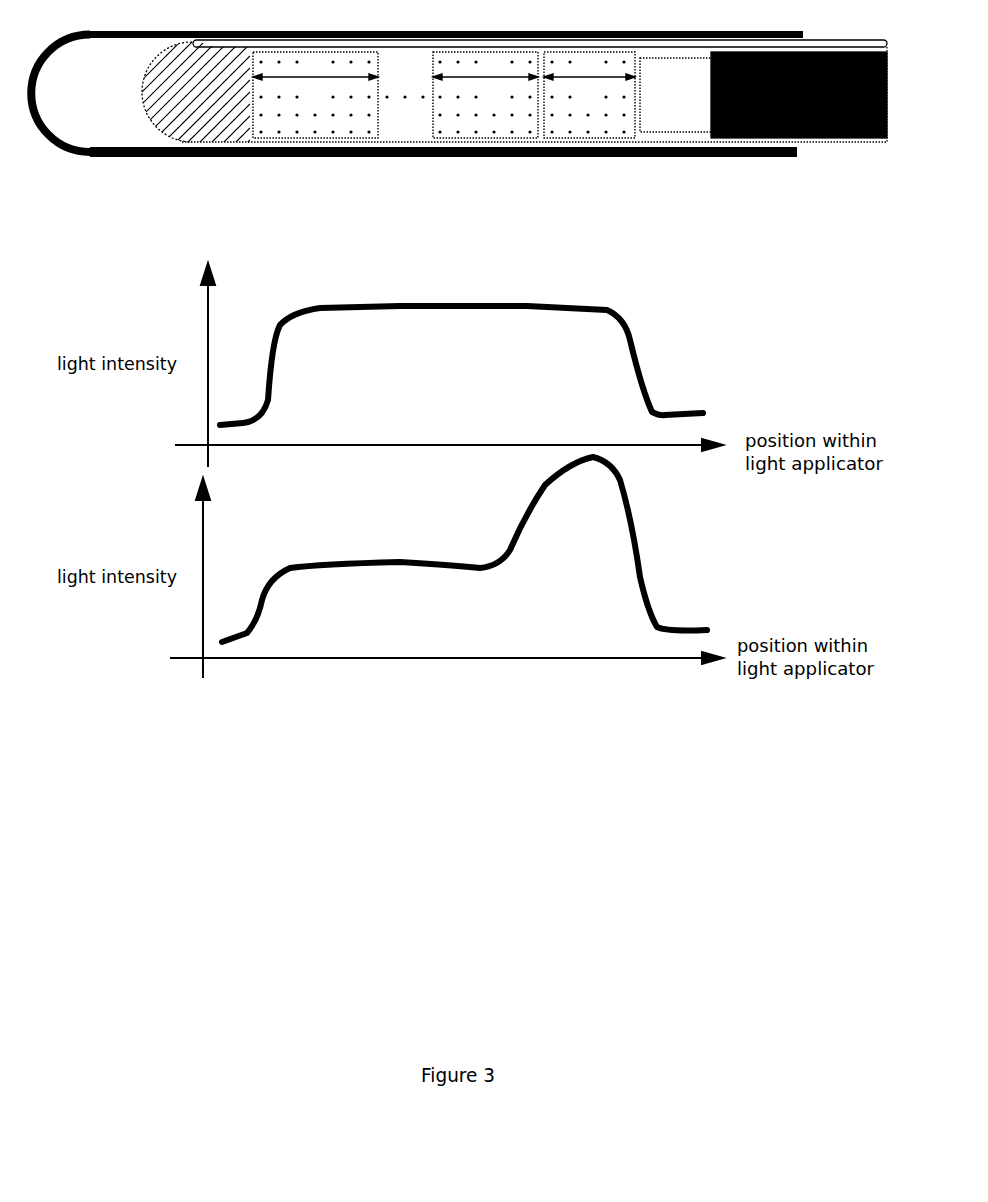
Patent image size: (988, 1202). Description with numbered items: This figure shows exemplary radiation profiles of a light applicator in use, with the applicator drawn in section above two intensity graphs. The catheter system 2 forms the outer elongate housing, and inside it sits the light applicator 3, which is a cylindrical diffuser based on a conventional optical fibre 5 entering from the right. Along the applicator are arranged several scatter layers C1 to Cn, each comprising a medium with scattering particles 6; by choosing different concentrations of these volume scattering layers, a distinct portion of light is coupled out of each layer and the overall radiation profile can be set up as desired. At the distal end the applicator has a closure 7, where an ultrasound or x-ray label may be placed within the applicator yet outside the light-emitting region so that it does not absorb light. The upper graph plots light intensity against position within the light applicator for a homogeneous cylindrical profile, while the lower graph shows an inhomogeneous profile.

The catheter system 2 is at (459, 86).
The light applicator 3 is at (190, 96).
The optical fibre 5 is at (797, 157).
The scattering particles 6 is at (326, 115).
The closure 7 is at (181, 128).